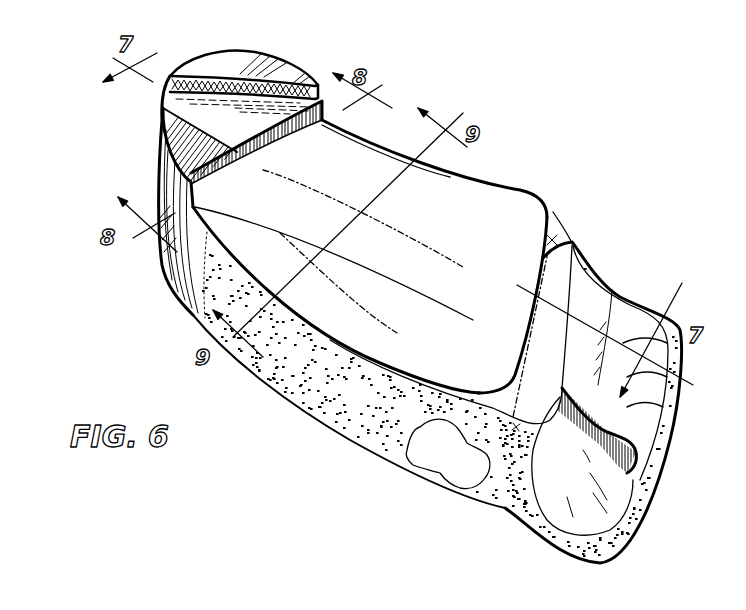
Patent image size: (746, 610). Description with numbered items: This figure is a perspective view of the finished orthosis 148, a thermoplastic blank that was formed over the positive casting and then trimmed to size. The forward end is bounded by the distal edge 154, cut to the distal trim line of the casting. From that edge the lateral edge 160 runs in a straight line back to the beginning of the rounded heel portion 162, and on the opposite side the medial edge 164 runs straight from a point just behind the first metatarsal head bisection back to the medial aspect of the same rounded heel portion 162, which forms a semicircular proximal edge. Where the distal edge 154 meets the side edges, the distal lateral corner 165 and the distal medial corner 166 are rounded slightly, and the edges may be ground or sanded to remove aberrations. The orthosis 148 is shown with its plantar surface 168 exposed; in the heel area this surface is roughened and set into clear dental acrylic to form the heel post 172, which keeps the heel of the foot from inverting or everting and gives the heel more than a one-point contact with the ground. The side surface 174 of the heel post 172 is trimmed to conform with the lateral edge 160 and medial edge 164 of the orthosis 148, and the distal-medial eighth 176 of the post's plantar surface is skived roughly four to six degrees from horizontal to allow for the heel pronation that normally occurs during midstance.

The orthosis 148 is at (510, 218).
The distal edge 154 is at (575, 245).
The lateral edge 160 is at (490, 185).
The heel portion 162 is at (157, 110).
The medial edge 164 is at (380, 363).
The distal lateral corner 165 is at (547, 210).
The distal medial corner 166 is at (497, 382).
The plantar surface 168 is at (500, 296).
The heel post 172 is at (272, 108).
The side surface 174 is at (187, 173).
The distal-medial eighth 176 is at (193, 143).